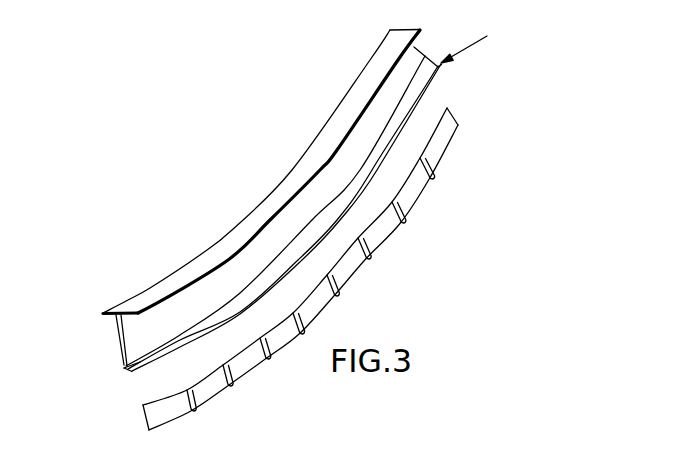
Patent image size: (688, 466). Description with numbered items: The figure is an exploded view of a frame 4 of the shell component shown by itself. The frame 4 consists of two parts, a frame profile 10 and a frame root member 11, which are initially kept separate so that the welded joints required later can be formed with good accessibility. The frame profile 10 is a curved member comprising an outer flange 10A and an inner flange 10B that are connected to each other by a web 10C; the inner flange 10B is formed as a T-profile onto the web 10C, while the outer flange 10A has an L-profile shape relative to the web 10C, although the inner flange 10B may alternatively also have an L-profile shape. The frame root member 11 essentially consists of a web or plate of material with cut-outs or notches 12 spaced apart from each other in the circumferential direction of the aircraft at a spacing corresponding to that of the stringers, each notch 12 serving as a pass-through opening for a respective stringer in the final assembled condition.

The frame profile 10 is at (239, 207).
The outer flange 10A is at (123, 368).
The inner flange 10B is at (140, 302).
The web 10C is at (115, 330).
The frame root member 11 is at (300, 269).
The notch 12 is at (398, 212).
The frame 4 is at (473, 40).